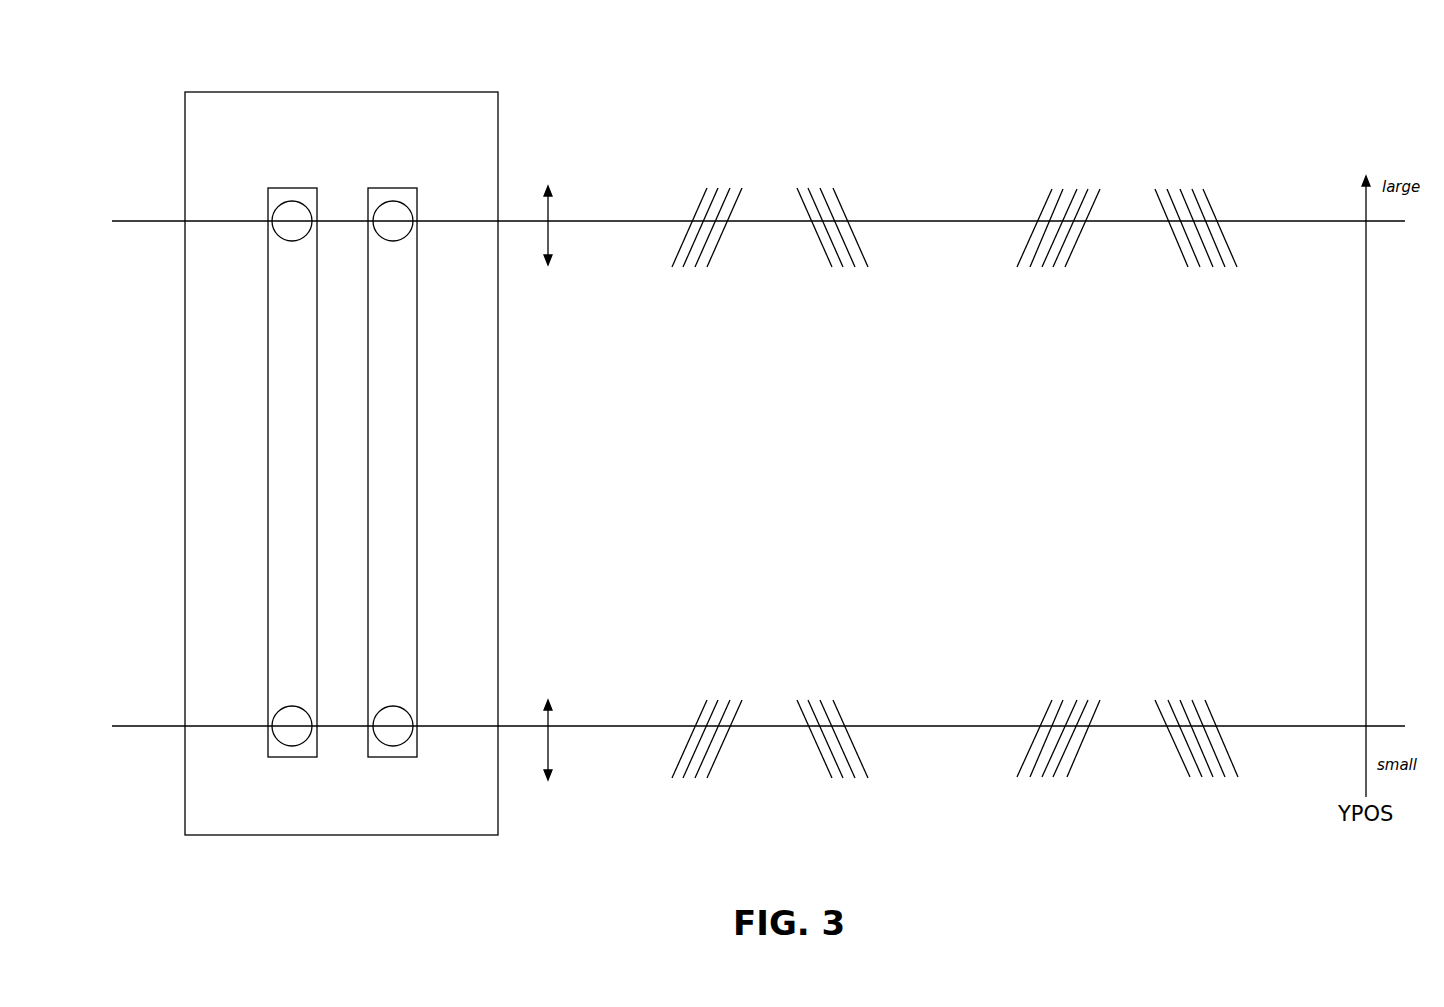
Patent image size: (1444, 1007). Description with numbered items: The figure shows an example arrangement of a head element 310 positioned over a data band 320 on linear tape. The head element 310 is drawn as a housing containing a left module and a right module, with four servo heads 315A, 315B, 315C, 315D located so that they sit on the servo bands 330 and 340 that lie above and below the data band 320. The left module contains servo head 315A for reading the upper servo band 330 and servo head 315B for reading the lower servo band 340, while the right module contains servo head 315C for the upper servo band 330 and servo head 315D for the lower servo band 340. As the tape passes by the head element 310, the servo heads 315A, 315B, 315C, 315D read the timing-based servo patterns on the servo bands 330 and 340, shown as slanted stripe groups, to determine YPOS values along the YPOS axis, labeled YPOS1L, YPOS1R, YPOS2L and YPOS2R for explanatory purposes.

The head element 310 is at (341, 463).
The servo head 315A is at (275, 202).
The servo head 315B is at (268, 733).
The servo head 315C is at (408, 205).
The servo head 315D is at (413, 730).
The data band 320 is at (758, 483).
The servo band 330 is at (926, 178).
The servo band 340 is at (965, 782).